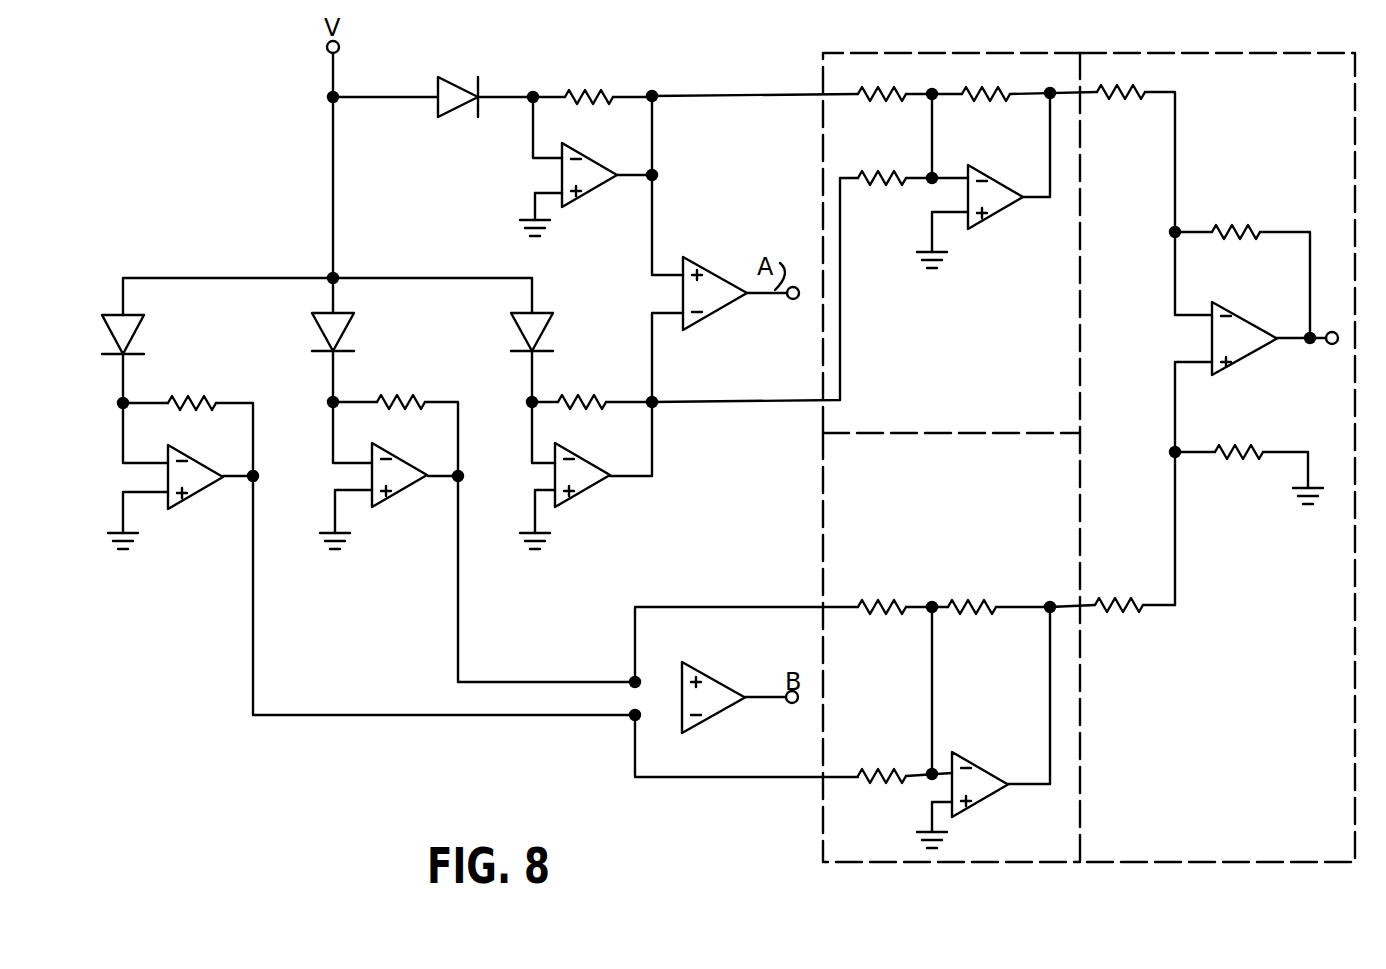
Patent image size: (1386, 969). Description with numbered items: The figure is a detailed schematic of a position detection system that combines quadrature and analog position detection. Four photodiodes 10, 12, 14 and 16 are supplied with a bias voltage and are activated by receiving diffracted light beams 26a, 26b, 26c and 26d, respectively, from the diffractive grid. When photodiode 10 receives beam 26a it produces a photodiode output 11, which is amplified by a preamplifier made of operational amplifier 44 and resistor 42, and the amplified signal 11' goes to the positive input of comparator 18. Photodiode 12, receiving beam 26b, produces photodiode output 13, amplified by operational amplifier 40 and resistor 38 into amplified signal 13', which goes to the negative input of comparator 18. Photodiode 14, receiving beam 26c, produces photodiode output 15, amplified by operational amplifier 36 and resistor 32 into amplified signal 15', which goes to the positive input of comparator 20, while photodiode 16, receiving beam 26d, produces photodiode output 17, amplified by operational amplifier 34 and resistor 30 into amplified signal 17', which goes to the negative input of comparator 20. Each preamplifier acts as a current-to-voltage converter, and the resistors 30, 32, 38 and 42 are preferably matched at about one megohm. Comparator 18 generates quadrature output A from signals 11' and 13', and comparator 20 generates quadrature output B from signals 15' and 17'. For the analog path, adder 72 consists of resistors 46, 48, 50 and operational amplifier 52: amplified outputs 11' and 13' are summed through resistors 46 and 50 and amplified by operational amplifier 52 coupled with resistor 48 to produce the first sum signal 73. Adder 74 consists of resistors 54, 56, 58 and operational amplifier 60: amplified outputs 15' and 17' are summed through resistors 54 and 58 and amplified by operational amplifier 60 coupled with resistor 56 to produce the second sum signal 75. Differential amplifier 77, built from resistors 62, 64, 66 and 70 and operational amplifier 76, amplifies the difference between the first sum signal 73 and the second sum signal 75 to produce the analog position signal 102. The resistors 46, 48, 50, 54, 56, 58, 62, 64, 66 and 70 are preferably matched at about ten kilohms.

The photodiode 10 is at (460, 84).
The photodiode output 11 is at (519, 75).
The resistor 42 is at (584, 90).
The diffracted light beam 26a is at (470, 120).
The operational amplifier 44 is at (590, 191).
The amplified signal 11' is at (681, 172).
The comparator 18 is at (726, 281).
The photodiode 16 is at (138, 330).
The photodiode 14 is at (346, 330).
The photodiode 12 is at (546, 330).
The diffracted light beam 26d is at (100, 338).
The diffracted light beam 26c is at (312, 338).
The diffracted light beam 26b is at (505, 340).
The resistor 30 is at (197, 394).
The resistor 32 is at (402, 394).
The resistor 38 is at (580, 394).
The photodiode output 17 is at (101, 413).
The photodiode output 15 is at (313, 412).
The photodiode output 13 is at (512, 412).
The amplified signal 13' is at (681, 419).
The amplified signal 17' is at (282, 489).
The amplified signal 15' is at (488, 489).
The operational amplifier 34 is at (196, 494).
The operational amplifier 36 is at (400, 492).
The operational amplifier 40 is at (583, 492).
The resistor 46 is at (875, 102).
The resistor 48 is at (985, 102).
The first sum signal 73 is at (1048, 91).
The resistor 50 is at (887, 186).
The operational amplifier 52 is at (996, 216).
The adder 72 is at (1047, 410).
The adder 74 is at (1047, 477).
The resistor 54 is at (884, 599).
The resistor 56 is at (972, 599).
The second sum signal 75 is at (1048, 598).
The resistor 58 is at (880, 766).
The operational amplifier 60 is at (988, 772).
The comparator 20 is at (714, 680).
The differential amplifier 77 is at (1332, 842).
The resistor 62 is at (1122, 100).
The resistor 64 is at (1125, 572).
The resistor 66 is at (1237, 240).
The resistor 70 is at (1250, 460).
The operational amplifier 76 is at (1240, 360).
The analog position signal 102 is at (1305, 348).